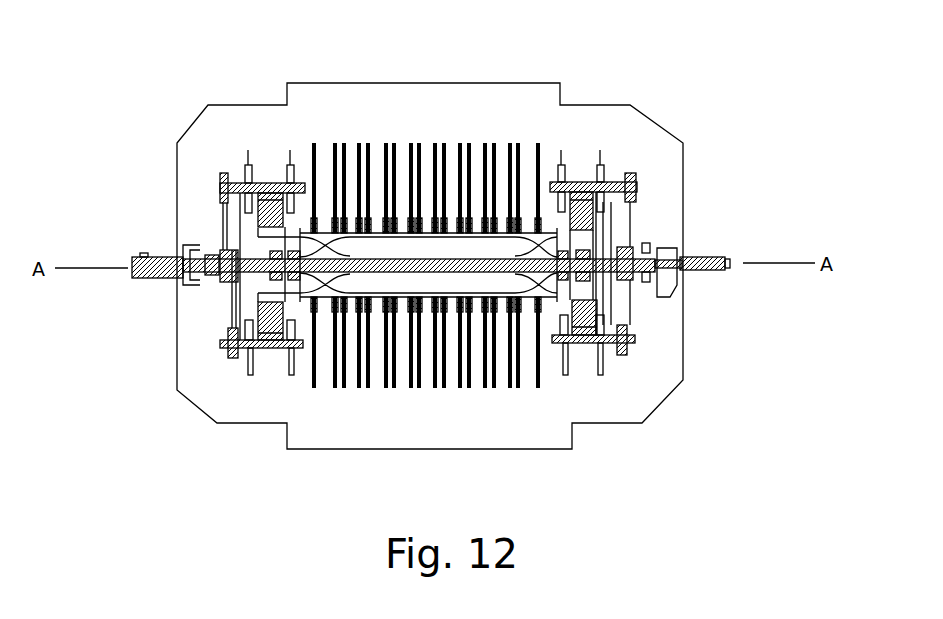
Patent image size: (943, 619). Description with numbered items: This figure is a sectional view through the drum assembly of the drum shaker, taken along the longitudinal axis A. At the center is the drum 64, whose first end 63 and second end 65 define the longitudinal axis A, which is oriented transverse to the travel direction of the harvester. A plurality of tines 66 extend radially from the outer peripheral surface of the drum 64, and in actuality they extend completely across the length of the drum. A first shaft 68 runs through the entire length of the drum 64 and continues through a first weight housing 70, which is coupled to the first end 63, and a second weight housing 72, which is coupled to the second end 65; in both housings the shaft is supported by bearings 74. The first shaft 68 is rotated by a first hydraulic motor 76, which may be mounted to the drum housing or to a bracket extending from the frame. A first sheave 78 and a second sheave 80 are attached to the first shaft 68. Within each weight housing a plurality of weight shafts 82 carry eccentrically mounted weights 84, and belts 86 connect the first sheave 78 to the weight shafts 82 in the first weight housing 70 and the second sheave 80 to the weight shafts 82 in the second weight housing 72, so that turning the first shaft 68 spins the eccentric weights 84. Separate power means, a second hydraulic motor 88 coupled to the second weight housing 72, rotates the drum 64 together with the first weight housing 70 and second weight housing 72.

The first end 63 is at (553, 300).
The drum 64 is at (321, 231).
The second end 65 is at (304, 302).
The tines 66 is at (449, 145).
The first shaft 68 is at (333, 300).
The first weight housing 70 is at (614, 172).
The second weight housing 72 is at (244, 389).
The bearings 74 is at (648, 250).
The first hydraulic motor 76 is at (708, 272).
The first sheave 78 is at (630, 282).
The second sheave 80 is at (222, 253).
The weight shafts 82 is at (222, 180).
The eccentrically mounted weights 84 is at (272, 182).
The belts 86 is at (225, 212).
The second hydraulic motor 88 is at (134, 274).